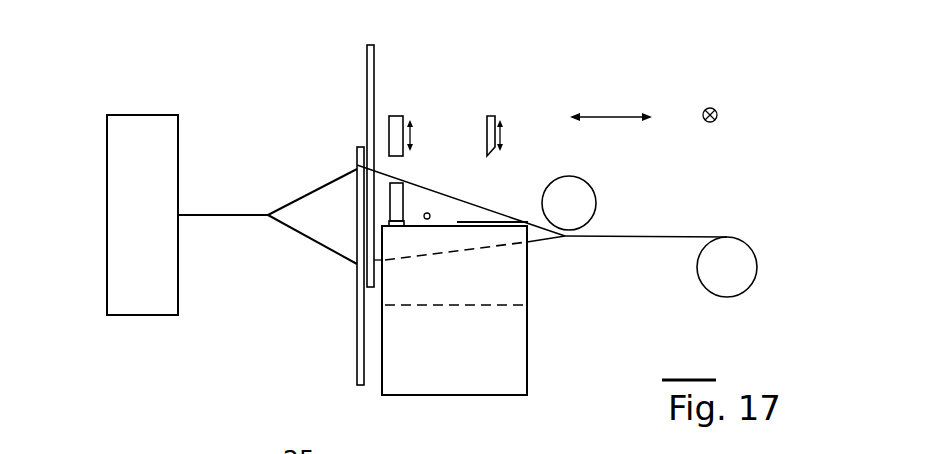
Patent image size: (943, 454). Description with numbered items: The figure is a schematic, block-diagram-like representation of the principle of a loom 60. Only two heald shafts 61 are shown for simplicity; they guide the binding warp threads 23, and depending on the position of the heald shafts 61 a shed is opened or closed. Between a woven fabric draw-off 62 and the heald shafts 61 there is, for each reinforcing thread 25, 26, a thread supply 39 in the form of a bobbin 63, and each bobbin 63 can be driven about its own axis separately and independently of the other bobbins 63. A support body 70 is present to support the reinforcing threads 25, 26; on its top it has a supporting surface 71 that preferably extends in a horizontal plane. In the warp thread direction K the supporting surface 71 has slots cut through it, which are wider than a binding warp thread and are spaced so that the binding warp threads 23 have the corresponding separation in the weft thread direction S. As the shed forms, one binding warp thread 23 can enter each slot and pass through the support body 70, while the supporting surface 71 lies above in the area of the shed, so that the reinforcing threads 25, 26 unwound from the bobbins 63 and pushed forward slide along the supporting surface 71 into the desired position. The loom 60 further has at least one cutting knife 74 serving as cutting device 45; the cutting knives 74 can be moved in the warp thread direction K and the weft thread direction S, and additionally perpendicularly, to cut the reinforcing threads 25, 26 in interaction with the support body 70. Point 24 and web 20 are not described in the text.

The web / material 20 is at (702, 230).
The binding warp threads 23 is at (308, 194).
The detection point 24 is at (430, 213).
The reinforcing weft thread 25 is at (392, 228).
The reinforcing warp thread 26 is at (493, 223).
The thread supply 39 is at (405, 190).
The cutting device 45 is at (398, 100).
The loom 60 is at (806, 90).
The heald shafts 61 is at (368, 56).
The woven fabric draw-off 62 is at (750, 272).
The bobbin 63 is at (585, 200).
The support body 70 is at (513, 387).
The supporting surface 71 is at (450, 218).
The cutting knife 74 is at (495, 100).
The warp thread direction K is at (618, 116).
The weft thread direction S is at (716, 120).